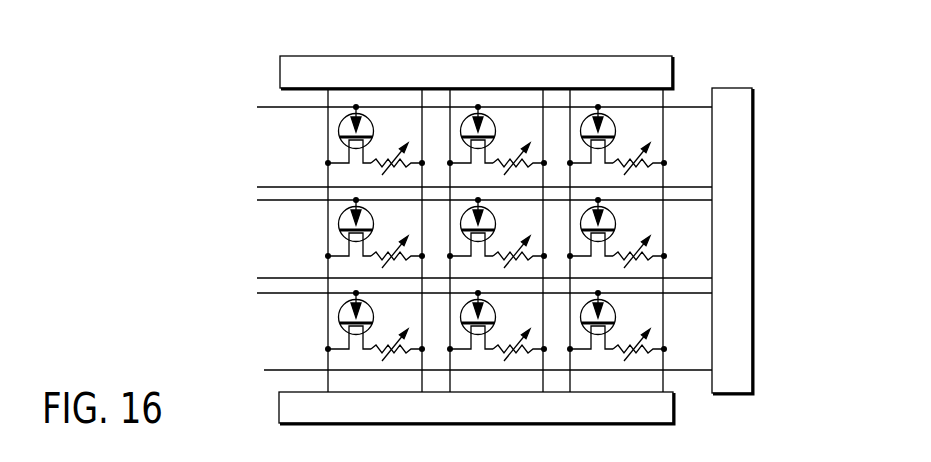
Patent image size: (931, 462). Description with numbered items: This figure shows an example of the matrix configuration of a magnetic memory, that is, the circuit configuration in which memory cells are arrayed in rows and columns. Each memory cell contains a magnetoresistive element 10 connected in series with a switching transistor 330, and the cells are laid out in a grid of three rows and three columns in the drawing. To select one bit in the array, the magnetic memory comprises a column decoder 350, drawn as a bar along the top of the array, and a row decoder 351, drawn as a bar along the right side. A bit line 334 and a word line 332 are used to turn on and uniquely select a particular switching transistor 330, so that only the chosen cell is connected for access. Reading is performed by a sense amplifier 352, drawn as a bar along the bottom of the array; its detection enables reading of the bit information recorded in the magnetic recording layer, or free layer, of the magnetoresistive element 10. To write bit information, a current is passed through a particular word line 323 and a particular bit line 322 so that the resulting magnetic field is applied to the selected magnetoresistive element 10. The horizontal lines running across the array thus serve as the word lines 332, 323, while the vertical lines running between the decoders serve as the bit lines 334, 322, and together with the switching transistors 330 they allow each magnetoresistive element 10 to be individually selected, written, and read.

The magnetoresistive element 10 is at (519, 239).
The bit line 322 is at (422, 100).
The word line 323 is at (257, 187).
The switching transistor 330 is at (340, 133).
The word line 332 is at (273, 107).
The bit line 334 is at (450, 100).
The column decoder 350 is at (586, 76).
The row decoder 351 is at (740, 148).
The sense amplifier 352 is at (675, 409).